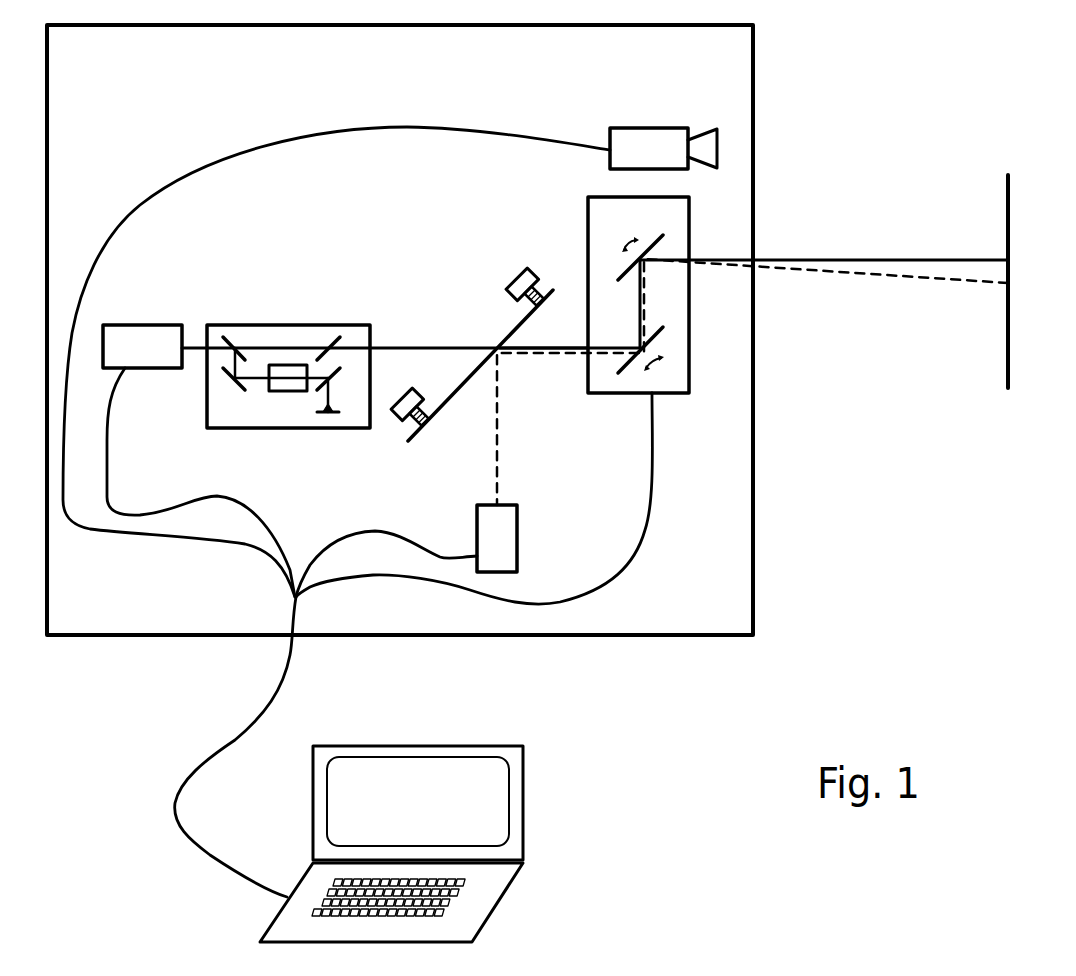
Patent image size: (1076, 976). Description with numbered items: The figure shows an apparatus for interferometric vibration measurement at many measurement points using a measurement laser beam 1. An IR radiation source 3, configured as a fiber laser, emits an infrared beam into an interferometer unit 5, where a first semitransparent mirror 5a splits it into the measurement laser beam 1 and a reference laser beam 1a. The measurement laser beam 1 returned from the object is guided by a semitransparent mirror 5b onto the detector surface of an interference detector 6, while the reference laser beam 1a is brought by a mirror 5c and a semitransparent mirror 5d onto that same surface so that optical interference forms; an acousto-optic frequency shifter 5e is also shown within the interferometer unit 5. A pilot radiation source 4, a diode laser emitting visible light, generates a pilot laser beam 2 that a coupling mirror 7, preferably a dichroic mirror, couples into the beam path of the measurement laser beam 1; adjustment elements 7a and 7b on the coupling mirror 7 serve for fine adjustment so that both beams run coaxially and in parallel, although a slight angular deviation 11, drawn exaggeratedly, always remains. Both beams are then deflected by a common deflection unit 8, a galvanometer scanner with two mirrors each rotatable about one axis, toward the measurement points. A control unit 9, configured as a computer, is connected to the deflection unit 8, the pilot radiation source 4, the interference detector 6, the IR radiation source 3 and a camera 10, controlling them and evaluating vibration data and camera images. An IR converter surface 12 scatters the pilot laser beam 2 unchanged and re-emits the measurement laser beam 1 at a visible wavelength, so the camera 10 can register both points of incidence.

The measurement laser beam 1 is at (460, 346).
The reference laser beam 1a is at (258, 383).
The pilot laser beam 2 is at (900, 278).
The IR radiation source 3 is at (162, 323).
The pilot radiation source 4 is at (522, 558).
The interferometer unit 5 is at (292, 324).
The semitransparent mirror 5a is at (228, 334).
The semitransparent mirror 5b is at (334, 334).
The mirror 5c is at (243, 387).
The semitransparent mirror 5d is at (340, 378).
The AOFS (acousto-optic frequency shifter) 5e is at (288, 398).
The interference detector 6 is at (328, 418).
The coupling mirror 7 is at (440, 410).
The adjustment element 7a is at (400, 422).
The adjustment element 7b is at (515, 270).
The deflection unit 8 is at (586, 224).
The control unit 9 is at (527, 815).
The camera 10 is at (602, 133).
The angular deviation 11 is at (550, 353).
The IR converter surface 12 is at (1012, 243).